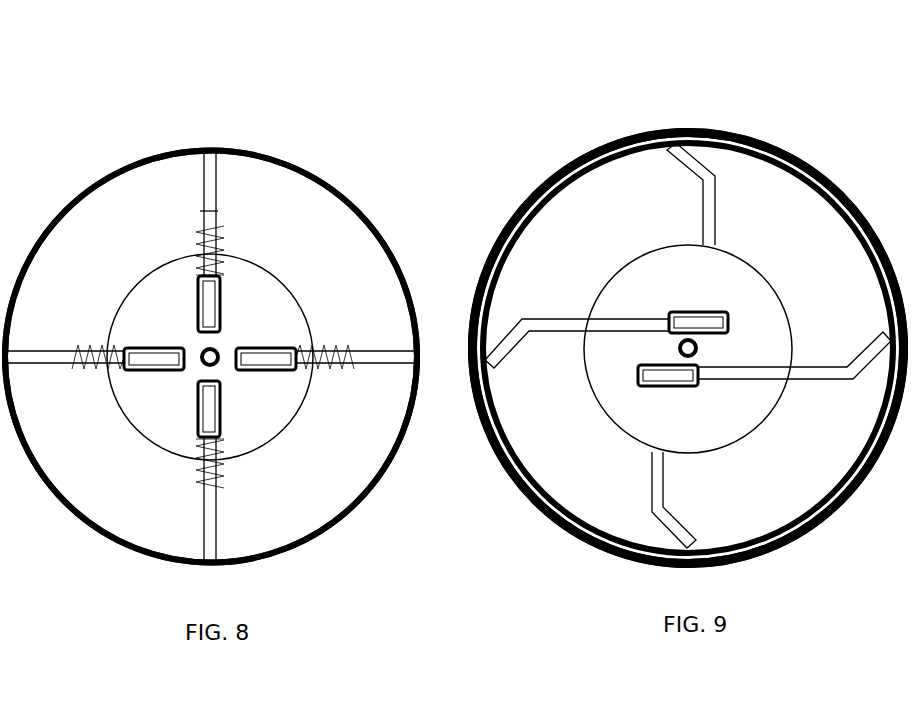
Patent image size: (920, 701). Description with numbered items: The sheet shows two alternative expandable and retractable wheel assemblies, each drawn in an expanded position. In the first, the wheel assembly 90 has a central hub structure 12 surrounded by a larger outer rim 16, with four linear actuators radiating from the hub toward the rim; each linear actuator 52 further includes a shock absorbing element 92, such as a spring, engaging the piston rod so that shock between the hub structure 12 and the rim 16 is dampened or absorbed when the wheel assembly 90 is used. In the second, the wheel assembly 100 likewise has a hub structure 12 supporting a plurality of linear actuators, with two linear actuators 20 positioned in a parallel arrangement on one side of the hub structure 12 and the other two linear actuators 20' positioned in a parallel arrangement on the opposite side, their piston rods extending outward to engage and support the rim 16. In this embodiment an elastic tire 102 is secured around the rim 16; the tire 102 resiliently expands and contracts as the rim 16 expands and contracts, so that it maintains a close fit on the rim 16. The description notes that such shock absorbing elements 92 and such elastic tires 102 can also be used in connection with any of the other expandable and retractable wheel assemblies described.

In FIG. 8, the hub structure 12 is at (283, 432).
In FIG. 9, the hub structure 12 is at (617, 420).
In FIG. 8, the rim 16 is at (73, 518).
In FIG. 9, the rim 16 is at (688, 127).
In FIG. 9, the linear actuators 20 is at (688, 442).
In FIG. 9, the linear actuators 20' is at (741, 168).
In FIG. 8, the linear actuator 52 is at (210, 211).
In FIG. 8, the expandable and retractable wheel assembly 90 is at (246, 126).
In FIG. 8, the shock absorbing element 92 is at (330, 349).
In FIG. 9, the expandable and retractable wheel assembly 100 is at (727, 94).
In FIG. 9, the elastic tire 102 is at (570, 158).